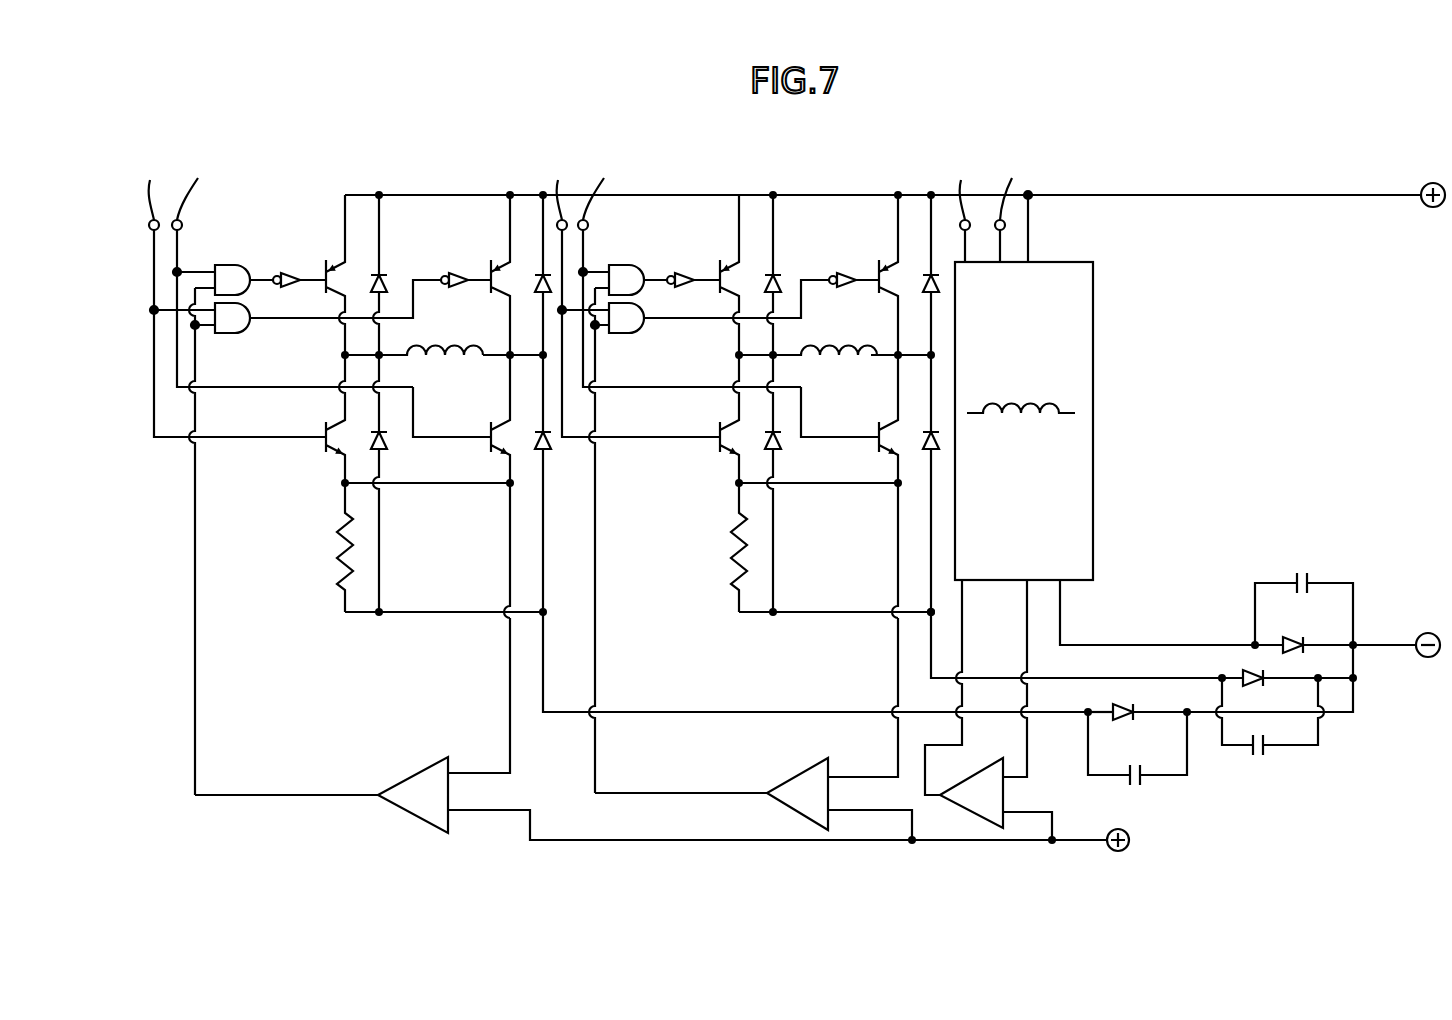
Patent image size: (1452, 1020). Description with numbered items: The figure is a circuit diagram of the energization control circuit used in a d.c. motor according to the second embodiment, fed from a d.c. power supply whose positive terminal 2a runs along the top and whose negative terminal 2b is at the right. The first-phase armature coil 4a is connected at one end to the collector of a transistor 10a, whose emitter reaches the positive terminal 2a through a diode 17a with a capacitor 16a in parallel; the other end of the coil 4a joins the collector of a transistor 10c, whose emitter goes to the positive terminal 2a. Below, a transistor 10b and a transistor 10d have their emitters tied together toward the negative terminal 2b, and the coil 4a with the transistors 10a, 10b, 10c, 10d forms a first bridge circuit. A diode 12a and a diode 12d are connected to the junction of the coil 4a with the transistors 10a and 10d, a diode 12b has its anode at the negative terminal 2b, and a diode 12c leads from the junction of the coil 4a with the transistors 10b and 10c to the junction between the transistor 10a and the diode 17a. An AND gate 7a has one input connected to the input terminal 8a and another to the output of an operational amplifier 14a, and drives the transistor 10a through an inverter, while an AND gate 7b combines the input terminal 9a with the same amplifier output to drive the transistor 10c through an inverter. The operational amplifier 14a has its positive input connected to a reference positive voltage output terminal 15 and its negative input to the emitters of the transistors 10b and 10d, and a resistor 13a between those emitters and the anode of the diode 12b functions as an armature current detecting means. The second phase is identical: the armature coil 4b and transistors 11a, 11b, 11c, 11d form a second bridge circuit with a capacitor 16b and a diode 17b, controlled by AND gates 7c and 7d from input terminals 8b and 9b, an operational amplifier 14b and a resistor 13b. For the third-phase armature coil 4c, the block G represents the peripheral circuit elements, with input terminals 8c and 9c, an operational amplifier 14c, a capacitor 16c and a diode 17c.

The positive terminal 2a is at (1433, 208).
The negative terminal 2b is at (1428, 657).
The armature coil 4a is at (445, 358).
The armature coil 4b is at (825, 384).
The armature coil 4c is at (1015, 420).
The AND gate 7a is at (224, 265).
The AND gate 7b is at (242, 333).
The AND gate 7c is at (638, 253).
The AND gate 7d is at (704, 340).
The input terminal 8a is at (292, 266).
The input terminal 8b is at (689, 266).
The input terminal 8c is at (1011, 203).
The input terminal 9a is at (154, 200).
The input terminal 9b is at (632, 291).
The input terminal 9c is at (950, 203).
The transistor 10a is at (326, 270).
The transistor 10b is at (490, 455).
The transistor 10c is at (489, 270).
The transistor 10d is at (325, 455).
The transistor 11a is at (705, 275).
The transistor 11b is at (862, 440).
The transistor 11c is at (864, 275).
The transistor 11d is at (694, 429).
The diode 12a is at (387, 275).
The diode 12b is at (545, 455).
The diode 12c is at (538, 278).
The diode 12d is at (387, 455).
The resistor 13a is at (340, 560).
The resistor 13b is at (690, 547).
The operational amplifier 14a is at (385, 785).
The operational amplifier 14b is at (770, 780).
The operational amplifier 14c is at (960, 808).
The reference positive voltage output terminal 15 is at (1128, 848).
The capacitor 16a is at (1150, 795).
The capacitor 16b is at (1270, 770).
The capacitor 16c is at (1303, 565).
The diode 17a is at (1123, 698).
The diode 17b is at (1255, 665).
The diode 17c is at (1312, 640).
The block G is at (1063, 421).